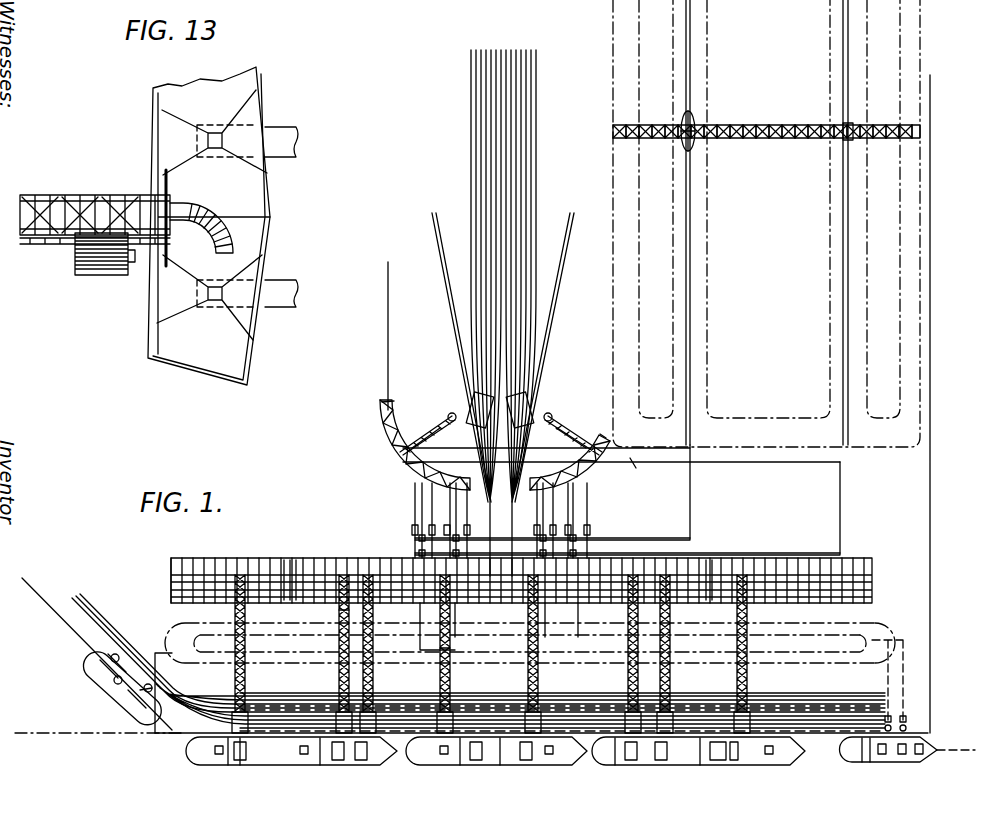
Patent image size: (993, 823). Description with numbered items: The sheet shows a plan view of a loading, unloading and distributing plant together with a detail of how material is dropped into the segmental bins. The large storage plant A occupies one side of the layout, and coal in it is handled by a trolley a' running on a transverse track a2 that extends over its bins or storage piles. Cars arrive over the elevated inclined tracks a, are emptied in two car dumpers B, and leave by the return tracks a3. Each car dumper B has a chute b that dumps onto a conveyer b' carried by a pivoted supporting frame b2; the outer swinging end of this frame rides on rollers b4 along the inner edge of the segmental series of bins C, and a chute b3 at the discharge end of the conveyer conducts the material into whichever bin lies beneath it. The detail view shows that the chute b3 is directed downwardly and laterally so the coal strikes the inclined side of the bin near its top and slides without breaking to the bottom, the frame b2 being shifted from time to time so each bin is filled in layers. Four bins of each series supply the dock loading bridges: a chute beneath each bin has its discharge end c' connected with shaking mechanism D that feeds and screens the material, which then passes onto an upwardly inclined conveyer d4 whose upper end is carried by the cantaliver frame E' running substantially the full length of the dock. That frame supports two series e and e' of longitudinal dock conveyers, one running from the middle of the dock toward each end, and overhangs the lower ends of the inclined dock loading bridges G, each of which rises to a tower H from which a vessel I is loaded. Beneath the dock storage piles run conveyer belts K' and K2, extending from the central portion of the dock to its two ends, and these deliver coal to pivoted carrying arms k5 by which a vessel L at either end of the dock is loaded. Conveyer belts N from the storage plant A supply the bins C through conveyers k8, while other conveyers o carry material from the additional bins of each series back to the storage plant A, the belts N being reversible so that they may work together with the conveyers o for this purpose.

In FIG. 1, the elevated tracks a is at (497, 357).
In FIG. 1, the trolley a' is at (767, 126).
In FIG. 1, the transverse track a2 is at (766, 118).
In FIG. 1, the return tracks a3 is at (528, 172).
In FIG. 1, the storage plant A is at (659, 366).
In FIG. 1, the car dumpers B is at (482, 398).
In FIG. 1, the chute b is at (501, 413).
In FIG. 13, the conveyer b' is at (131, 209).
In FIG. 1, the conveyer b' is at (499, 426).
In FIG. 13, the pivoted supporting frame b2 is at (78, 193).
In FIG. 13, the chute b3 is at (256, 240).
In FIG. 13, the rollers b4 is at (165, 266).
In FIG. 1, the discharge end of chute c' is at (494, 412).
In FIG. 13, the segmental series of bins C is at (262, 110).
In FIG. 1, the segmental series of bins C is at (467, 482).
In FIG. 1, the conveyers o is at (636, 470).
In FIG. 1, the conveyer belts N is at (690, 522).
In FIG. 1, the shaking mechanism D is at (411, 530).
In FIG. 1, the conveyer d4 is at (411, 550).
In FIG. 1, the longitudinal dock conveyers e is at (286, 567).
In FIG. 1, the cantaliver frame E' is at (536, 580).
In FIG. 1, the longitudinal dock conveyers e' is at (489, 574).
In FIG. 1, the dock loading bridge G is at (338, 615).
In FIG. 1, the conveyer belts K' is at (515, 678).
In FIG. 1, the conveyer belts K2 is at (866, 677).
In FIG. 1, the pivoted carrying arm k5 is at (118, 654).
In FIG. 1, the conveyers k8 is at (432, 614).
In FIG. 1, the tower H is at (541, 712).
In FIG. 1, the vessel I is at (276, 760).
In FIG. 1, the vessel L is at (113, 707).